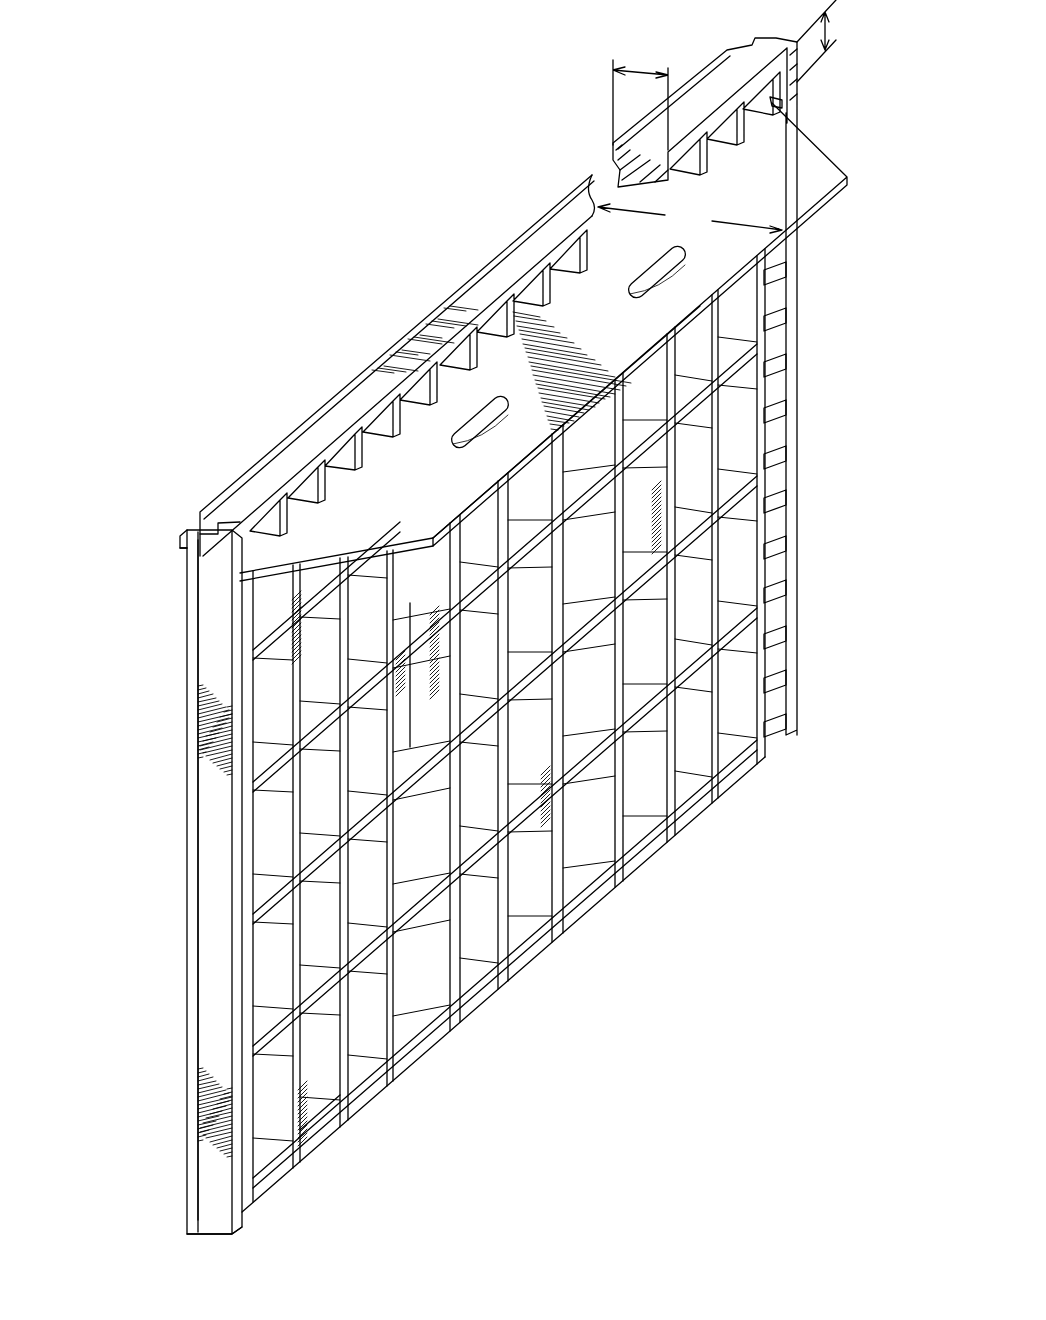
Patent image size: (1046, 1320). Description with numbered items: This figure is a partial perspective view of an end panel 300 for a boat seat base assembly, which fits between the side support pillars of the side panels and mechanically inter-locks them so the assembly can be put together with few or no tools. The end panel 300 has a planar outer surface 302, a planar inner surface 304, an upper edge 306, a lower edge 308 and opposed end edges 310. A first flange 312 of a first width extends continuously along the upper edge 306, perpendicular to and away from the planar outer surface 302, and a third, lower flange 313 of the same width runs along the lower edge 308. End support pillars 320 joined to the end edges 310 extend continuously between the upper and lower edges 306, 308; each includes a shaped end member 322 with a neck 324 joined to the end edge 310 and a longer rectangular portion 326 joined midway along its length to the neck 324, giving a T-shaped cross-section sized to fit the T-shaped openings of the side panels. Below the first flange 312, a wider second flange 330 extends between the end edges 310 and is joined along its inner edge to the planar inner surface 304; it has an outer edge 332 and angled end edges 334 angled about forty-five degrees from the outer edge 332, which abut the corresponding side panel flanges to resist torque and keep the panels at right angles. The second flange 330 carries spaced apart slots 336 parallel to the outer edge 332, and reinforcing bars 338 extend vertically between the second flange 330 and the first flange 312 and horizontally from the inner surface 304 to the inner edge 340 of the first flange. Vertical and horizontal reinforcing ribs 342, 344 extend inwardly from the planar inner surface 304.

The end panel 300 is at (455, 280).
The planar outer surface 302 is at (395, 343).
The planar inner surface 304 is at (503, 730).
The upper edge 306 is at (186, 520).
The lower edge 308 is at (185, 1216).
The end edges 310 is at (735, 43).
The first flange 312 is at (397, 365).
The third flange 313 is at (318, 1124).
The end support pillars 320 is at (250, 493).
The shaped end member 322 is at (198, 651).
The neck 324 is at (228, 518).
The rectangular portion 326 is at (190, 527).
The second flange 330 is at (556, 342).
The outer edge 332 is at (478, 502).
The angled end edges 334 is at (385, 571).
The slots 336 is at (655, 276).
The reinforcing bars 338 is at (370, 446).
The inner edge 340 is at (556, 282).
The vertical reinforcing ribs 342 is at (482, 983).
The horizontal reinforcing ribs 344 is at (582, 828).